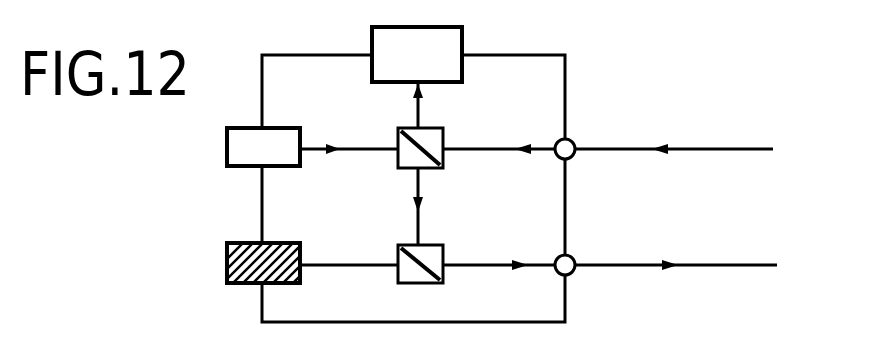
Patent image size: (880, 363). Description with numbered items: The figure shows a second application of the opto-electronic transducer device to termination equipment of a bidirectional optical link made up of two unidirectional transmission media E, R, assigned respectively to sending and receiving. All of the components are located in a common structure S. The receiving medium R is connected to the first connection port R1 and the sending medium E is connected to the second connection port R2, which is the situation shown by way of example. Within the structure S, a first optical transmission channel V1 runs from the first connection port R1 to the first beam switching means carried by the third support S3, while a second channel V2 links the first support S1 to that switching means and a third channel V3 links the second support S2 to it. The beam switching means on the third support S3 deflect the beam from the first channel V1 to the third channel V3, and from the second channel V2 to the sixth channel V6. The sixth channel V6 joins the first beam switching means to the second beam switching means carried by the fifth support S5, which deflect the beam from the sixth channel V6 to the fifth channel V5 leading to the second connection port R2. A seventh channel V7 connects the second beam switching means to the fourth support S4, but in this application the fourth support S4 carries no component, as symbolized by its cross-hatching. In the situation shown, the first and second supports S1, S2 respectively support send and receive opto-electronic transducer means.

The common structure S is at (567, 95).
The first support S1 is at (226, 145).
The second support S2 is at (462, 35).
The third support S3 is at (397, 166).
The fourth support S4 is at (226, 260).
The fifth support S5 is at (397, 282).
The first optical transmission channel V1 is at (500, 152).
The second optical transmission channel V2 is at (357, 146).
The third optical transmission channel V3 is at (420, 110).
The fifth optical transmission channel V5 is at (500, 268).
The sixth optical transmission channel V6 is at (420, 220).
The seventh optical transmission channel V7 is at (340, 263).
The unidirectional transmission medium assigned to receiving R is at (718, 147).
The unidirectional transmission medium assigned to sending E is at (714, 263).
The first connection port R1 is at (572, 160).
The second connection port R2 is at (572, 276).